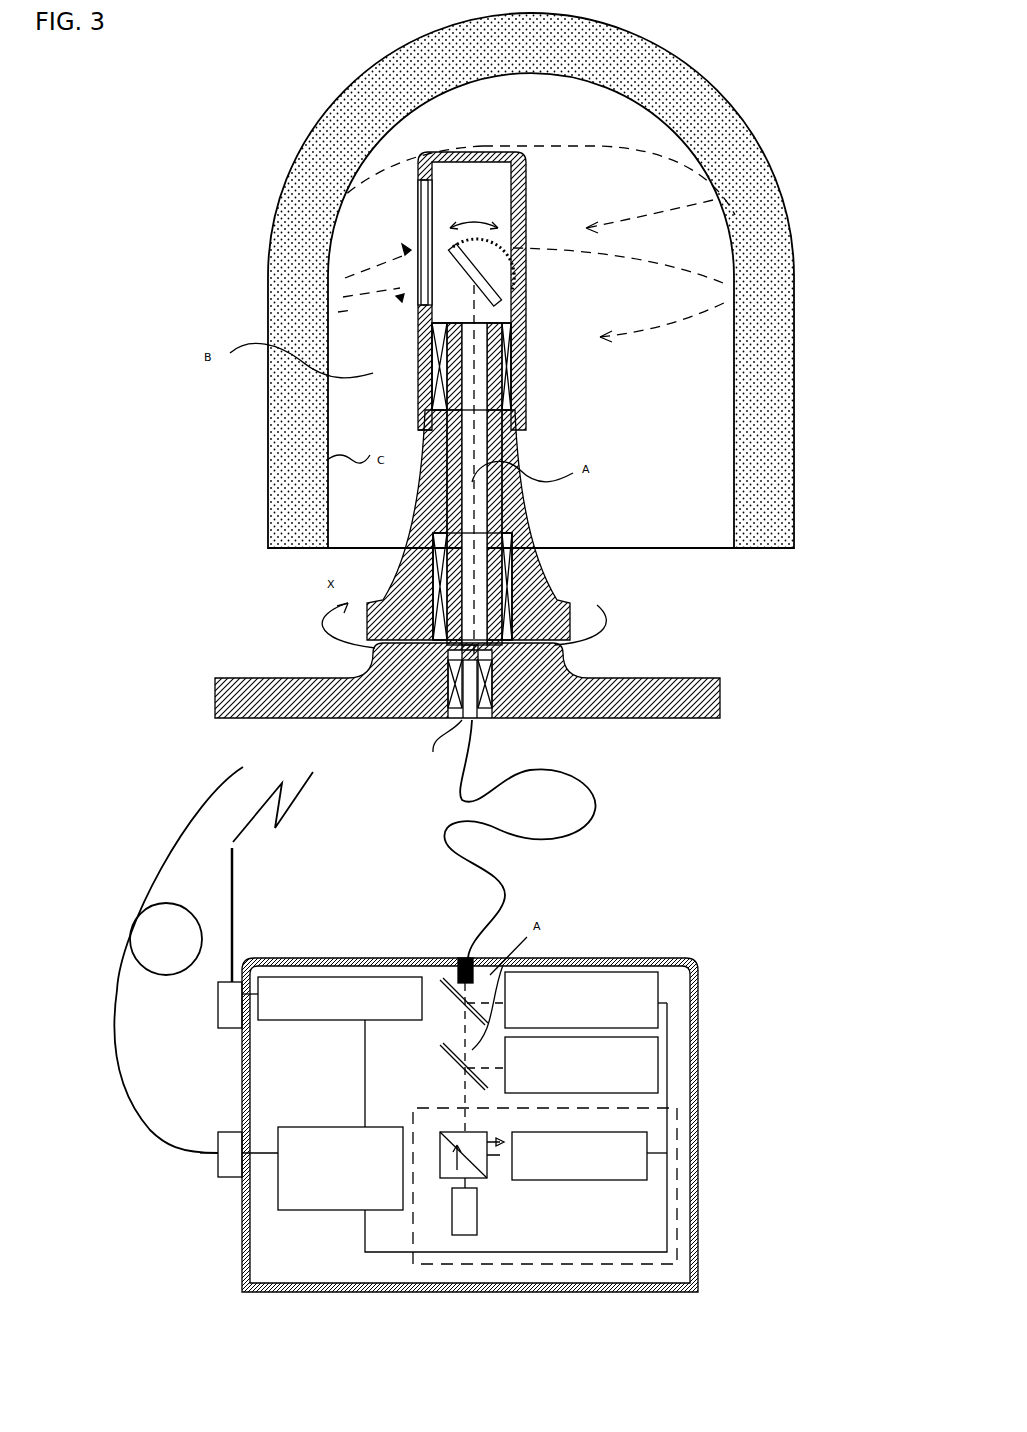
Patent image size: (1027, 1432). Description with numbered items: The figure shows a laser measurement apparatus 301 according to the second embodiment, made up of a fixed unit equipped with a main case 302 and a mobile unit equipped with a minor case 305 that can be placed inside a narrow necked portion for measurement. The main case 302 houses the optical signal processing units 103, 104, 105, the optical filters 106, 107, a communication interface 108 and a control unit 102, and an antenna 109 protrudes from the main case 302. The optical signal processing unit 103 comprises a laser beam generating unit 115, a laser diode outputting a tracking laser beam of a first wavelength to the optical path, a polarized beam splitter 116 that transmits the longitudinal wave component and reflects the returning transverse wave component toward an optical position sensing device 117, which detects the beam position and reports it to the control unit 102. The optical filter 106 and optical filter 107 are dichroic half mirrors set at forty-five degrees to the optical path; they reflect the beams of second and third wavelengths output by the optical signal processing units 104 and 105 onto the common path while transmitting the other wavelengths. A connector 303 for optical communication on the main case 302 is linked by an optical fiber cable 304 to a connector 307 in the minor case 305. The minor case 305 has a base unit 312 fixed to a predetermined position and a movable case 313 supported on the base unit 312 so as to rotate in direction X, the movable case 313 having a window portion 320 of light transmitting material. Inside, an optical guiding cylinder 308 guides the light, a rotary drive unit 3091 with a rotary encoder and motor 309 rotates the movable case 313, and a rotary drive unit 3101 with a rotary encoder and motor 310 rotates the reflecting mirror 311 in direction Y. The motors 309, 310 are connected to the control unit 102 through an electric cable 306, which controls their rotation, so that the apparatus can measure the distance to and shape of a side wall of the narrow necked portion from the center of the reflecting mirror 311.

The laser measurement apparatus 301 is at (210, 477).
The window portion 320 is at (420, 222).
The movable case 313 is at (527, 182).
The reflecting mirror 311 is at (512, 278).
The rotary drive unit 3101 is at (513, 247).
The motor 310 is at (566, 323).
The minor case 305 is at (538, 432).
The optical guiding cylinder 308 is at (498, 504).
The rotary drive unit 3091 is at (520, 540).
The motor 309 is at (566, 584).
The base unit 312 is at (560, 658).
The connector for optical communication 307 is at (436, 745).
The optical fiber cable 304 is at (592, 803).
The electric cable 306 is at (195, 808).
The antenna 109 is at (234, 860).
The communication interface 108 is at (330, 980).
The connector for optical communication 303 is at (462, 958).
The main case 302 is at (695, 958).
The optical signal processing unit 104 is at (650, 1000).
The optical signal processing unit 105 is at (650, 1068).
The optical filter 106 is at (440, 983).
The optical filter 107 is at (440, 1047).
The optical position sensing device 117 is at (648, 1150).
The control unit 102 is at (245, 1200).
The polarized beam splitter 116 is at (440, 1185).
The optical signal processing unit 103 is at (660, 1213).
The laser beam generating unit 115 is at (466, 1236).